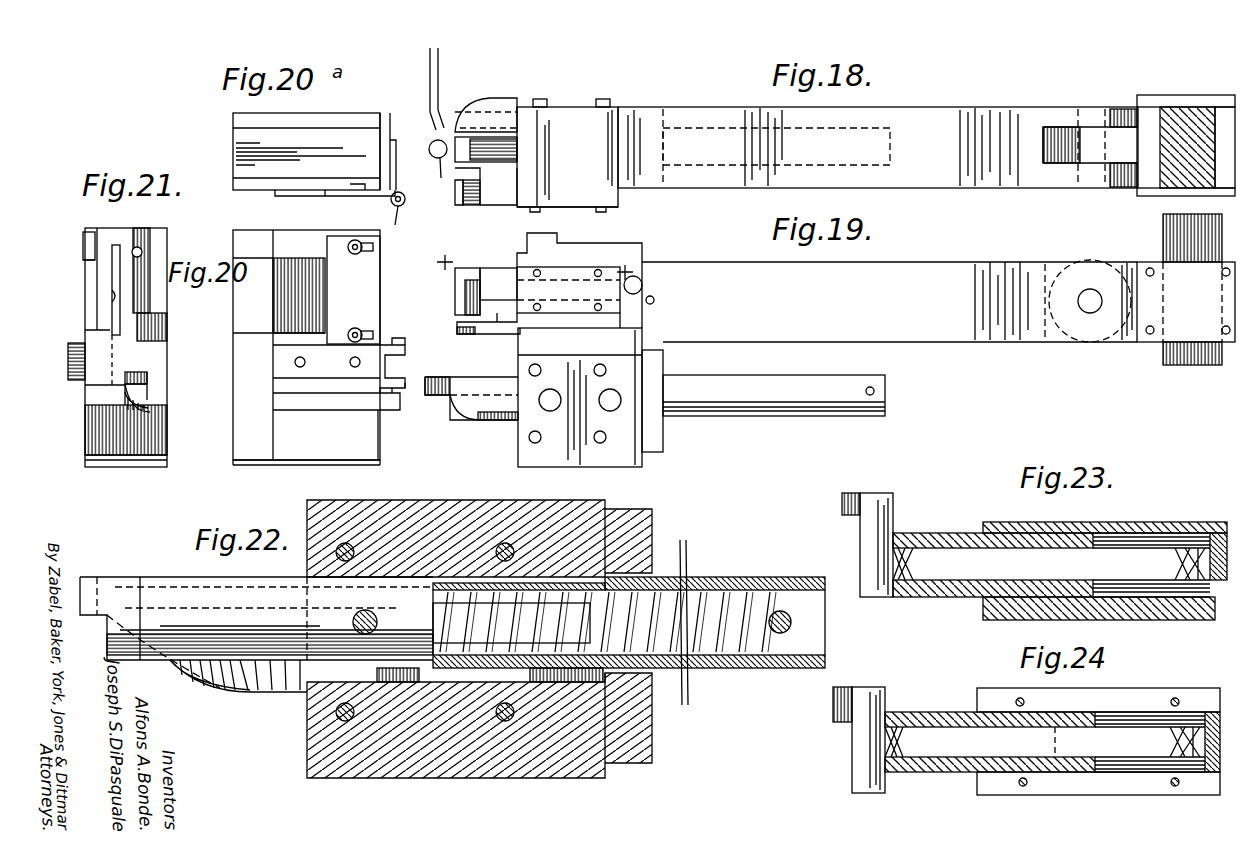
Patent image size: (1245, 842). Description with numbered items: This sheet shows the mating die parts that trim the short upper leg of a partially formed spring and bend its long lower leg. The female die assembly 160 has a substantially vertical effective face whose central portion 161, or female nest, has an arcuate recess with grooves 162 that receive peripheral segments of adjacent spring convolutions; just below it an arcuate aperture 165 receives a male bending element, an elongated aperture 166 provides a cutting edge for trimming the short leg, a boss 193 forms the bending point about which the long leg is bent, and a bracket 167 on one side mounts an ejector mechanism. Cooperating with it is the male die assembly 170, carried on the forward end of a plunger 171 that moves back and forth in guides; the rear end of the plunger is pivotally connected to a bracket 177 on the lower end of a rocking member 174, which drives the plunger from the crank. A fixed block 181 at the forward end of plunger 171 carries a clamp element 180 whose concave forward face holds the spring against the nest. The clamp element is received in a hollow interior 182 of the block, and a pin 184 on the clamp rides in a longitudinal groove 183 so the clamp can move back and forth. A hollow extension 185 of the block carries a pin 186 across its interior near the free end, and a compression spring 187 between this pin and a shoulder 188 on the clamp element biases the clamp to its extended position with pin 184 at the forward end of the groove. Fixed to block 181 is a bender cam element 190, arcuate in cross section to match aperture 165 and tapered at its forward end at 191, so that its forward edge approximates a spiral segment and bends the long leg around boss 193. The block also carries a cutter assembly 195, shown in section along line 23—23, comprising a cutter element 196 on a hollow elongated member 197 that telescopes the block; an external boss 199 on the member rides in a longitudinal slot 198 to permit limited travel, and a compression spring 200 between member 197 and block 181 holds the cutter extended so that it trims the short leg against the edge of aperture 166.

In FIG. 19, the section line 23 is at (547, 279).
In FIG. 21, the female die assembly 160 is at (110, 230).
In FIG. 20, the female die assembly 160 is at (276, 220).
In FIG. 21, the central portion 161 is at (147, 377).
In FIG. 21, the grooves 162 is at (150, 385).
In FIG. 21, the arcuate aperture 165 is at (150, 403).
In FIG. 21, the elongated aperture 166 is at (112, 296).
In FIG. 20A, the bracket 167 is at (416, 221).
In FIG. 21, the bracket 167 is at (78, 343).
In FIG. 20, the bracket 167 is at (402, 345).
In FIG. 19, the bracket 167 is at (457, 330).
In FIG. 18, the male die assembly 170 is at (556, 84).
In FIG. 19, the male die assembly 170 is at (628, 247).
In FIG. 18, the plunger 171 is at (920, 108).
In FIG. 19, the plunger 171 is at (905, 262).
In FIG. 18, the rocking member 174 is at (1185, 107).
In FIG. 19, the rocking member 174 is at (1163, 240).
In FIG. 18, the bracket 177 is at (1143, 95).
In FIG. 19, the bracket 177 is at (1150, 343).
In FIG. 18, the clamp element 180 is at (486, 149).
In FIG. 19, the clamp element 180 is at (433, 410).
In FIG. 22, the clamp element 180 is at (85, 577).
In FIG. 18, the fixed block 181 is at (586, 104).
In FIG. 20, the fixed block 181 is at (402, 460).
In FIG. 19, the fixed block 181 is at (584, 243).
In FIG. 23, the fixed block 181 is at (1172, 522).
In FIG. 24, the fixed block 181 is at (1112, 795).
In FIG. 22, the hollow interior 182 is at (518, 578).
In FIG. 22, the longitudinal groove 183 is at (392, 638).
In FIG. 22, the pin 184 is at (355, 618).
In FIG. 18, the hollow extension 185 is at (890, 146).
In FIG. 19, the hollow extension 185 is at (808, 416).
In FIG. 22, the hollow extension 185 is at (738, 577).
In FIG. 19, the pin 186 is at (874, 391).
In FIG. 22, the pin 186 is at (791, 622).
In FIG. 22, the compression spring 187 is at (715, 640).
In FIG. 22, the shoulder 188 is at (452, 665).
In FIG. 18, the bender cam element 190 is at (455, 125).
In FIG. 19, the bender cam element 190 is at (492, 412).
In FIG. 22, the bender cam element 190 is at (235, 690).
In FIG. 22, the taper 191 is at (158, 668).
In FIG. 18, the boss 193 is at (455, 190).
In FIG. 20A, the boss 193 is at (392, 185).
In FIG. 21, the boss 193 is at (108, 398).
In FIG. 19, the cutter assembly 195 is at (476, 258).
In FIG. 23, the cutter assembly 195 is at (882, 484).
In FIG. 24, the cutter assembly 195 is at (840, 760).
In FIG. 23, the cutter element 196 is at (842, 505).
In FIG. 24, the cutter element 196 is at (833, 705).
In FIG. 23, the hollow elongated member 197 is at (950, 520).
In FIG. 24, the hollow elongated member 197 is at (955, 773).
In FIG. 23, the longitudinal slot 198 is at (1213, 600).
In FIG. 23, the external boss 199 is at (1100, 600).
In FIG. 24, the external boss 199 is at (1090, 742).
In FIG. 23, the compression spring 200 is at (920, 580).
In FIG. 24, the compression spring 200 is at (900, 740).